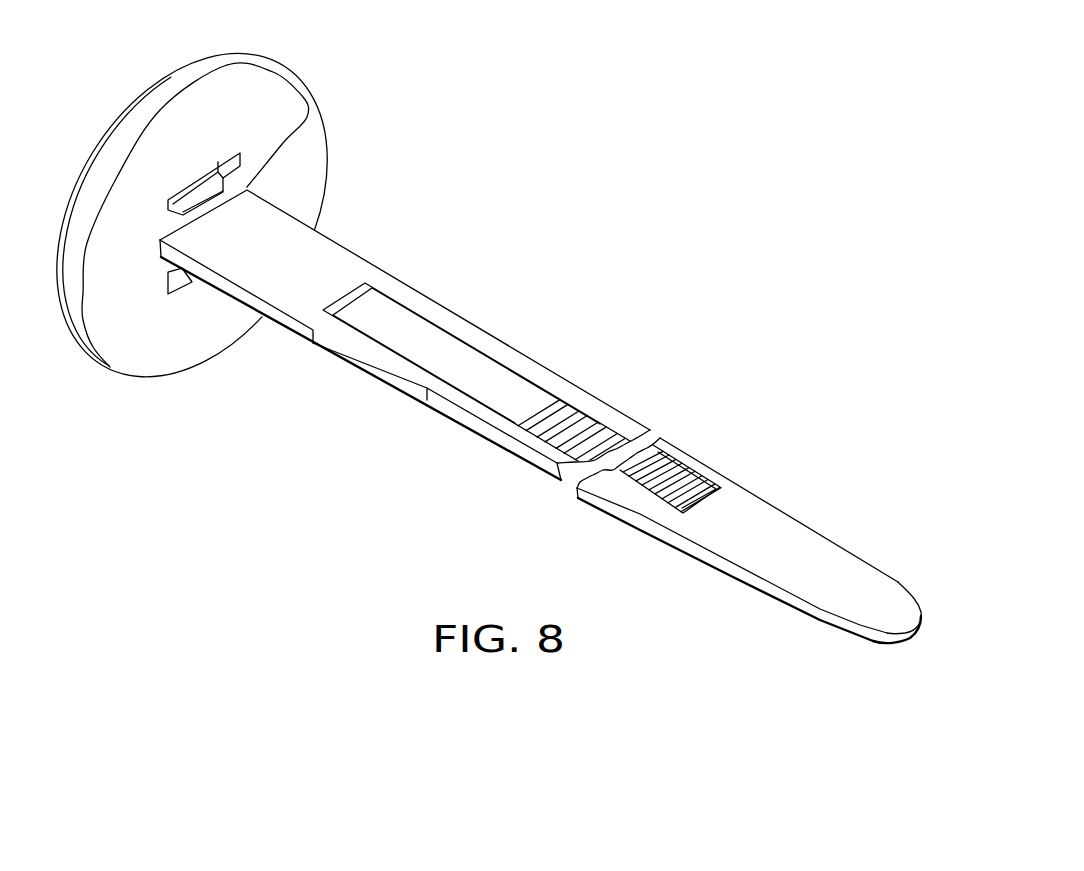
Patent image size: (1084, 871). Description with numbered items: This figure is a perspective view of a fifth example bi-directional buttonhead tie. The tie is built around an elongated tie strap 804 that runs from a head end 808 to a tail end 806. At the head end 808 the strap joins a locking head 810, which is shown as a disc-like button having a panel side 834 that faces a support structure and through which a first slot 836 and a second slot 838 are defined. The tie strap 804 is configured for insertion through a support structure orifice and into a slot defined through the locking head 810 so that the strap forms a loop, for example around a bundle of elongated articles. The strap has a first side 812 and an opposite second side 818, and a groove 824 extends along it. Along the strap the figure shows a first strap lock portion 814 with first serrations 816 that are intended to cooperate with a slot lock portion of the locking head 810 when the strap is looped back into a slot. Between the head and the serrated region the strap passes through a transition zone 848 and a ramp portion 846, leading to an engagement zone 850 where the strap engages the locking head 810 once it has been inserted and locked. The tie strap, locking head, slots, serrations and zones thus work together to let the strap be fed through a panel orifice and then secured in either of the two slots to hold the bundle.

The tie strap 804 is at (758, 513).
The tail end 806 is at (917, 637).
The head end 808 is at (88, 155).
The locking head 810 is at (228, 63).
The first side 812 is at (850, 560).
The first strap lock portion 814 is at (700, 420).
The first serrations 816 is at (650, 463).
The second side 818 is at (712, 567).
The groove 824 is at (463, 358).
The panel side 834 is at (305, 152).
The first slot 836 is at (296, 88).
The second slot 838 is at (180, 283).
The ramp portion 846 is at (398, 378).
The transition zone 848 is at (280, 313).
The engagement zone 850 is at (607, 405).